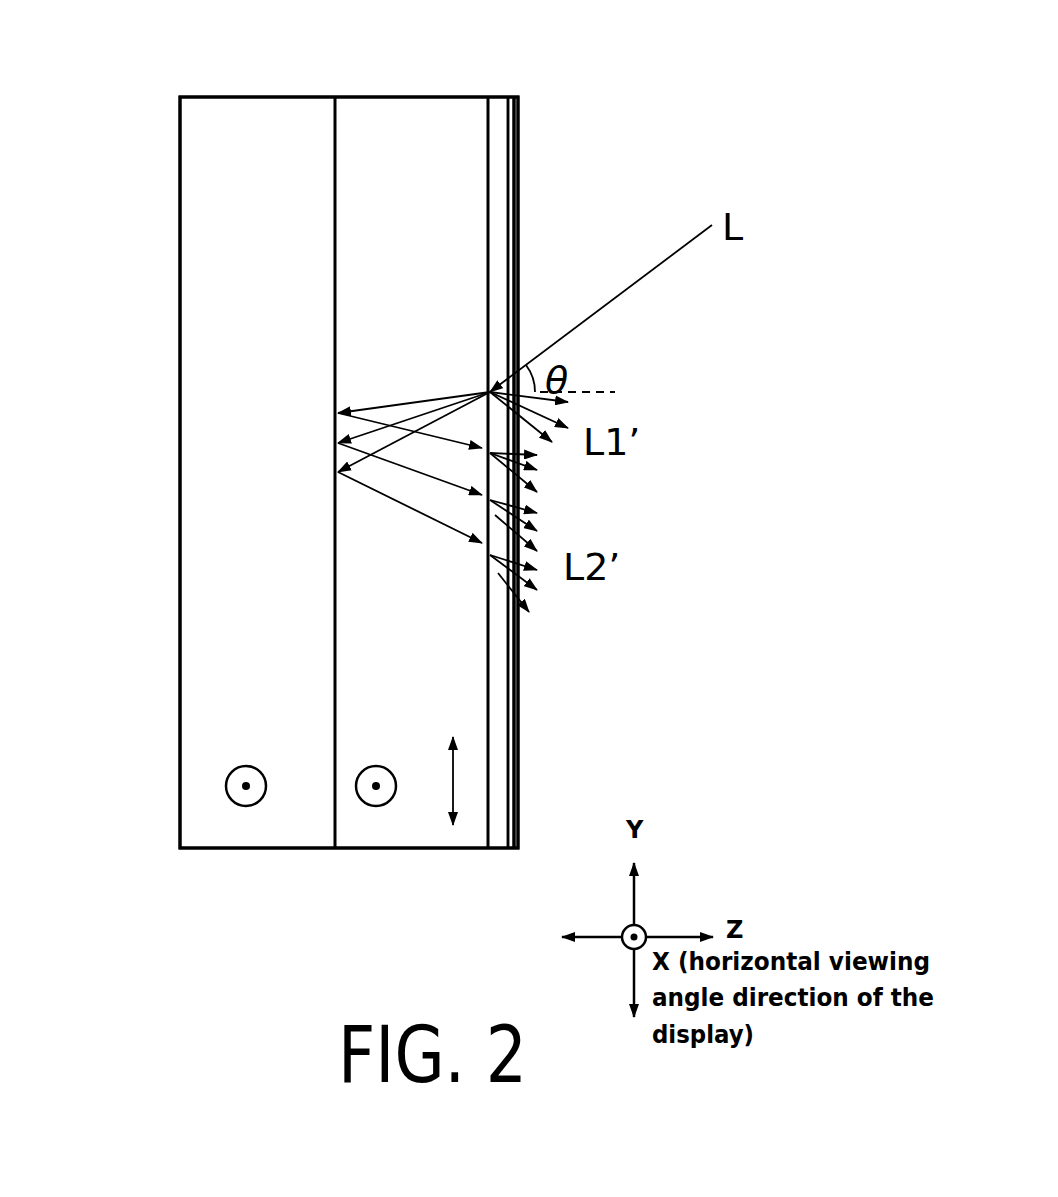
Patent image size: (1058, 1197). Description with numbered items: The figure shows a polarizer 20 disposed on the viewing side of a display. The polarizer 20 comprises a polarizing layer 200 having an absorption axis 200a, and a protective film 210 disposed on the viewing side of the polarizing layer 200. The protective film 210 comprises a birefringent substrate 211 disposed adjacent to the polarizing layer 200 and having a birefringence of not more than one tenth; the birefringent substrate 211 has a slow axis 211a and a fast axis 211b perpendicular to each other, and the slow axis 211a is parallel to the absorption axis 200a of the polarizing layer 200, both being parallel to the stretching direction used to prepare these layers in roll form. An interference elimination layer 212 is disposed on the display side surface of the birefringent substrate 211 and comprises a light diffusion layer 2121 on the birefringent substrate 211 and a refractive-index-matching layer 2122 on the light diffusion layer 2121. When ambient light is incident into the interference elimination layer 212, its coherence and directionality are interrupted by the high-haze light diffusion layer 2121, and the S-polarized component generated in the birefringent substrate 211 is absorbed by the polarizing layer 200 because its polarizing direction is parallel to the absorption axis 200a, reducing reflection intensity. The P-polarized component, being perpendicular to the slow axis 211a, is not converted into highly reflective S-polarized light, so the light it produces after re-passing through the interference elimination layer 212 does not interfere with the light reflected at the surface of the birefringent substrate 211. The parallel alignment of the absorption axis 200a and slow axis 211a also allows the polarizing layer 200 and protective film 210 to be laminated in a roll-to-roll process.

The polarizer 20 is at (100, 65).
The polarizing layer 200 is at (212, 201).
The absorption axis 200a is at (222, 786).
The protective film 210 is at (517, 90).
The birefringent substrate 211 is at (462, 640).
The slow axis 211a is at (376, 817).
The fast axis 211b is at (468, 789).
The interference elimination layer 212 is at (517, 860).
The light diffusion layer 2121 is at (500, 133).
The refractive-index-matching layer 2122 is at (517, 223).